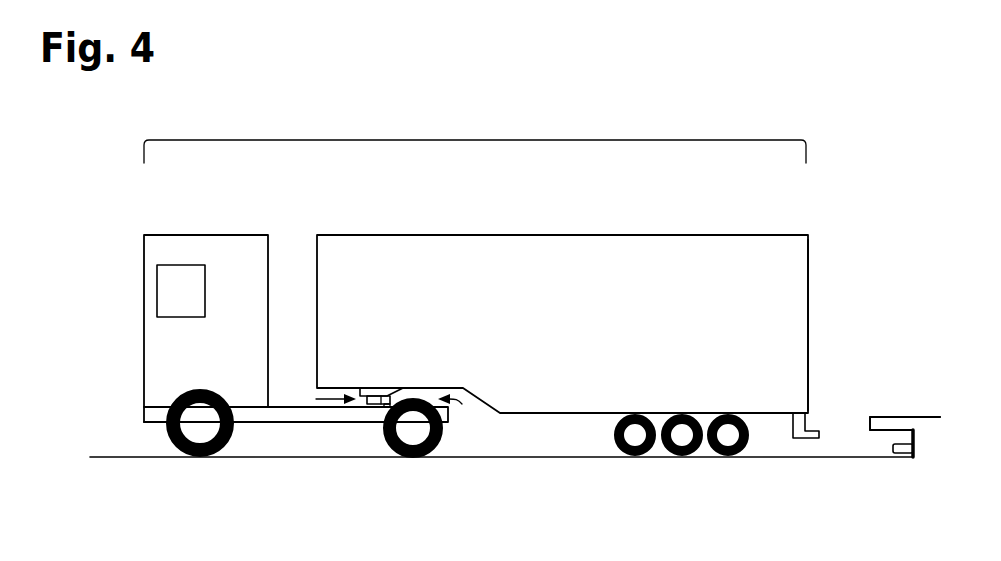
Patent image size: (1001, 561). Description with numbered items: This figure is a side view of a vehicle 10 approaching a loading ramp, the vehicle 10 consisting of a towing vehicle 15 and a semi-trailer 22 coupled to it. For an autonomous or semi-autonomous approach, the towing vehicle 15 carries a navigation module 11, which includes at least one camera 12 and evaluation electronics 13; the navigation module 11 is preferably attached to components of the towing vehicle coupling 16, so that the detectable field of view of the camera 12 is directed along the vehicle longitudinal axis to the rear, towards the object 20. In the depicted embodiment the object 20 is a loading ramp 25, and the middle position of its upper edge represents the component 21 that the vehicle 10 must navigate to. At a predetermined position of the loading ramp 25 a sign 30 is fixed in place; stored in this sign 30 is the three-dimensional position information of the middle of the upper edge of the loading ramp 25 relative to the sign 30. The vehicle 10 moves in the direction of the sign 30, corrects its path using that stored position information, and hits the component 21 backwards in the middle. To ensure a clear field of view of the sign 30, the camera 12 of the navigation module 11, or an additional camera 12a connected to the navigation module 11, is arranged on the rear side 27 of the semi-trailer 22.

The vehicle 10 is at (479, 140).
The navigation module 11 is at (316, 399).
The camera 12 is at (383, 405).
The additional camera 12a is at (815, 445).
The evaluation electronics 13 is at (366, 403).
The towing vehicle 15 is at (144, 258).
The towing vehicle coupling 16 is at (462, 404).
The object 20 is at (884, 350).
The component 21 is at (870, 417).
The semi-trailer 22 is at (345, 283).
The loading ramp 25 is at (922, 417).
The rear side 27 is at (808, 253).
The sign 30 is at (902, 453).